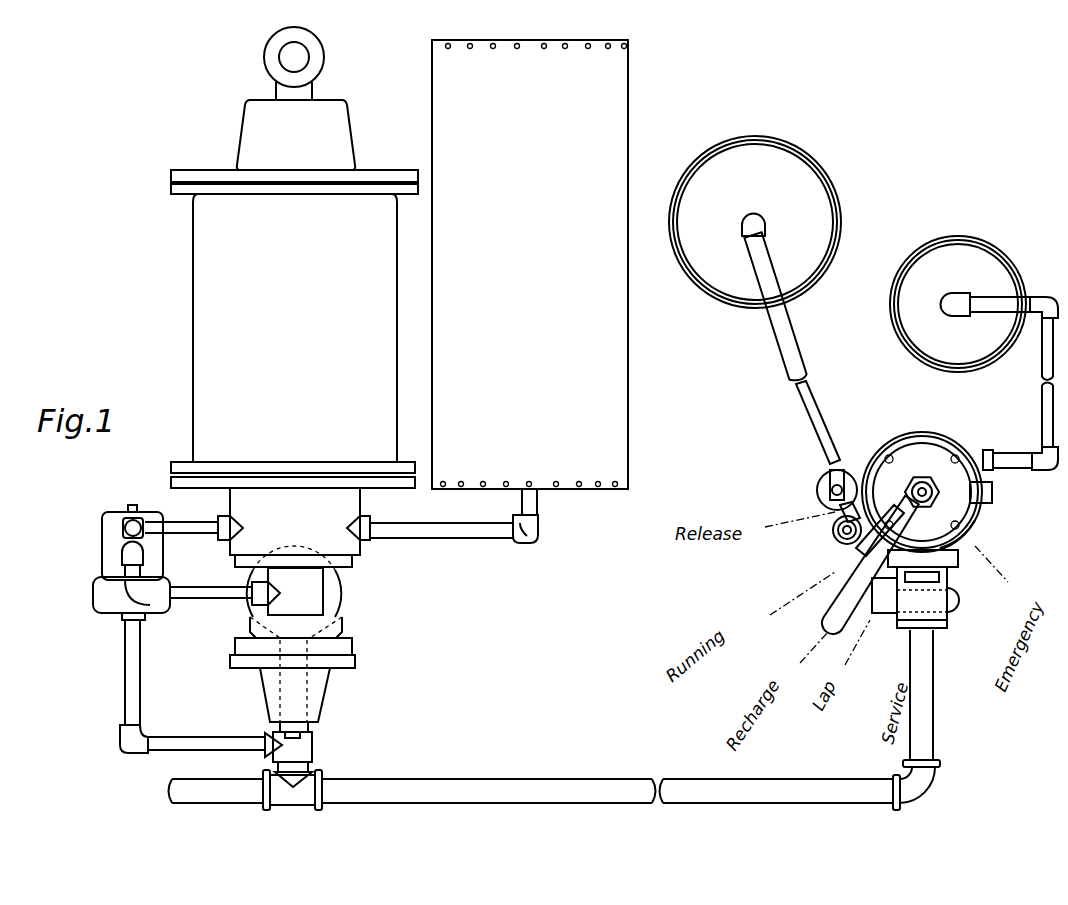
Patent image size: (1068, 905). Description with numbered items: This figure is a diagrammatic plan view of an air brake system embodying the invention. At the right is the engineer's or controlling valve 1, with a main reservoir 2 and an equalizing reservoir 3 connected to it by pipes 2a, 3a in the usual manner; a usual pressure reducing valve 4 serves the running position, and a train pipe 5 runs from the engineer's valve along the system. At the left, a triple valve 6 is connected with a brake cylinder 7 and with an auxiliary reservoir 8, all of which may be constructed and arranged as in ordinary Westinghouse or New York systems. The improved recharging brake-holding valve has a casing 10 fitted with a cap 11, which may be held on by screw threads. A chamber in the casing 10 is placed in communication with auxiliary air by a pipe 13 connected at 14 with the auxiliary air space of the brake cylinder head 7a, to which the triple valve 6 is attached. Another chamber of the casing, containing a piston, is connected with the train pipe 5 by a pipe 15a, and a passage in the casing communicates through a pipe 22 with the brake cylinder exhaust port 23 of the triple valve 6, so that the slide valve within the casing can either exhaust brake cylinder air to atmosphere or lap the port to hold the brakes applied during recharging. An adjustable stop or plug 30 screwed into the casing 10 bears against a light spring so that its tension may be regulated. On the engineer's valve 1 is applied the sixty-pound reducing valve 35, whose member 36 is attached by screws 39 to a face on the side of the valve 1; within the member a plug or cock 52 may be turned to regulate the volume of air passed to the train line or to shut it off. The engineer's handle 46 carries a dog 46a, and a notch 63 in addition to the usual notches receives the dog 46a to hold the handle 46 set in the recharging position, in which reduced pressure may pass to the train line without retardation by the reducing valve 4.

The engineer's valve 1 is at (932, 421).
The main reservoir 2 is at (755, 222).
The pipe 2a is at (790, 345).
The equalizing reservoir 3 is at (958, 304).
The pipe 3a is at (1000, 381).
The pressure reducing valve 4 is at (950, 597).
The train pipe 5 is at (944, 716).
The triple valve 6 is at (318, 702).
The brake cylinder 7 is at (388, 393).
The brake cylinder head 7a is at (295, 527).
The auxiliary reservoir 8 is at (632, 382).
The casing 10 is at (103, 543).
The cap 11 is at (108, 614).
The pipe 13 is at (183, 522).
The connection 14 is at (248, 521).
The pipe 15a is at (139, 667).
The pipe 22 is at (197, 592).
The brake cylinder exhaust port 23 is at (282, 586).
The adjustable stop 30 is at (132, 504).
The reducing valve 35 is at (845, 541).
The member 36 is at (838, 526).
The screws 39 is at (859, 550).
The engineer's handle 46 is at (826, 613).
The dog 46a is at (976, 540).
The plug 52 is at (848, 560).
The notch 63 is at (914, 482).